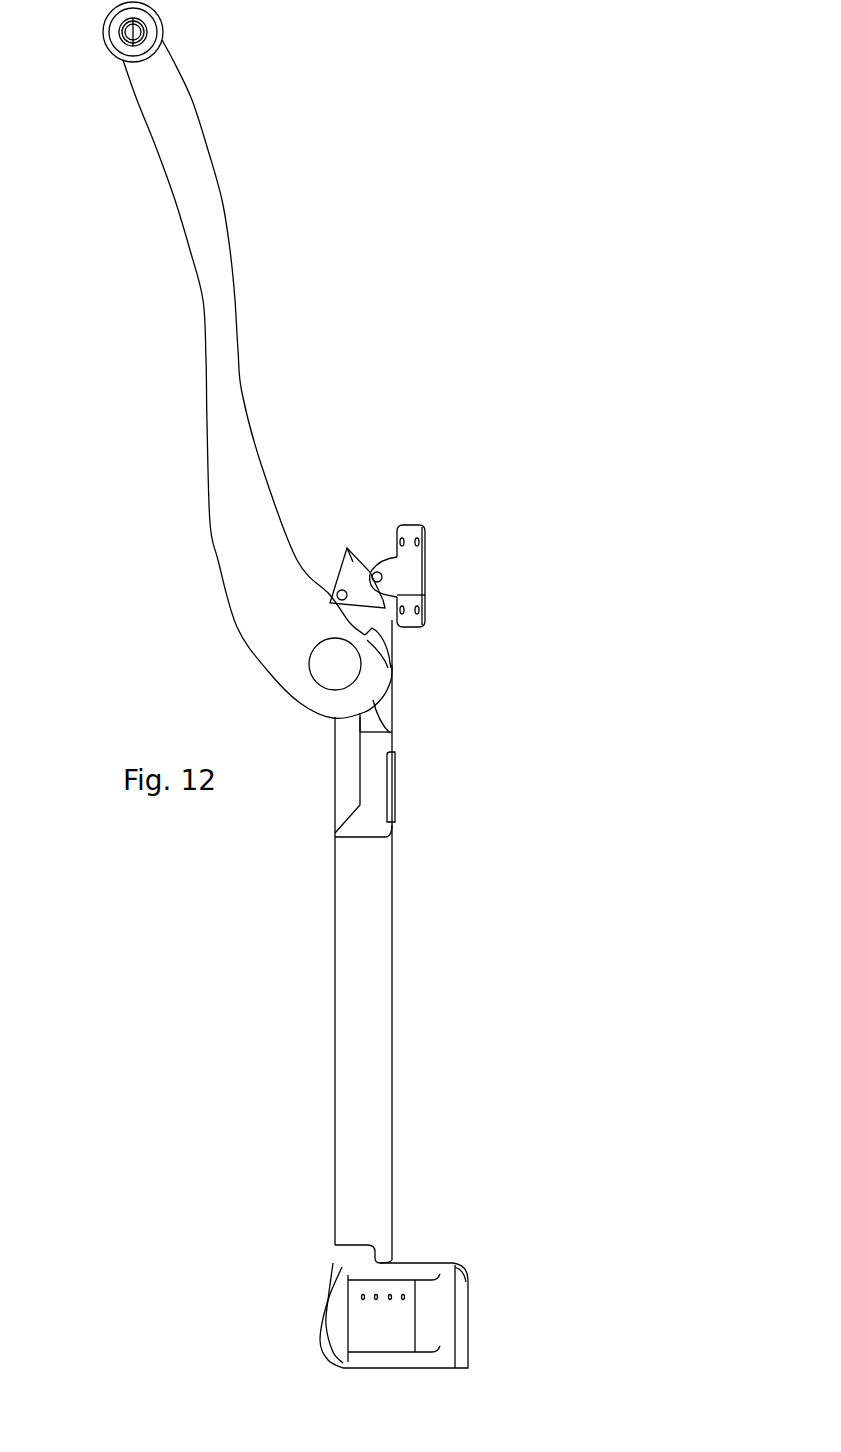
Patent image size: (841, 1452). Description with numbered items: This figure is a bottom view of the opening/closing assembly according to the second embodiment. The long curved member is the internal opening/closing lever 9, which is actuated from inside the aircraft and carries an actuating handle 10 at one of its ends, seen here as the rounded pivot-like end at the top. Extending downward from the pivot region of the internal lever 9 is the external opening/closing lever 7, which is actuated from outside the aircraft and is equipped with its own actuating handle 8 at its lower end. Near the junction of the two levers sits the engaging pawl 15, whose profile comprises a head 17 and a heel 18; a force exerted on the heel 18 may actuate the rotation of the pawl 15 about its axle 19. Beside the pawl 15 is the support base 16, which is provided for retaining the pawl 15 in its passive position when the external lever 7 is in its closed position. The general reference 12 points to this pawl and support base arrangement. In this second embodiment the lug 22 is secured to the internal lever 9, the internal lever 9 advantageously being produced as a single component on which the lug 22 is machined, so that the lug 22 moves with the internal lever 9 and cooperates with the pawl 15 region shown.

The external opening/closing lever 7 is at (380, 745).
The actuating handle 8 is at (443, 1295).
The internal opening/closing lever 9 is at (225, 290).
The actuating handle 10 is at (124, 42).
The latch assembly 12 is at (424, 506).
The engaging pawl 15 is at (343, 578).
The support base 16 is at (413, 578).
The head 17 is at (395, 630).
The heel 18 is at (353, 563).
The axle 19 is at (330, 598).
The lug 22 is at (390, 670).